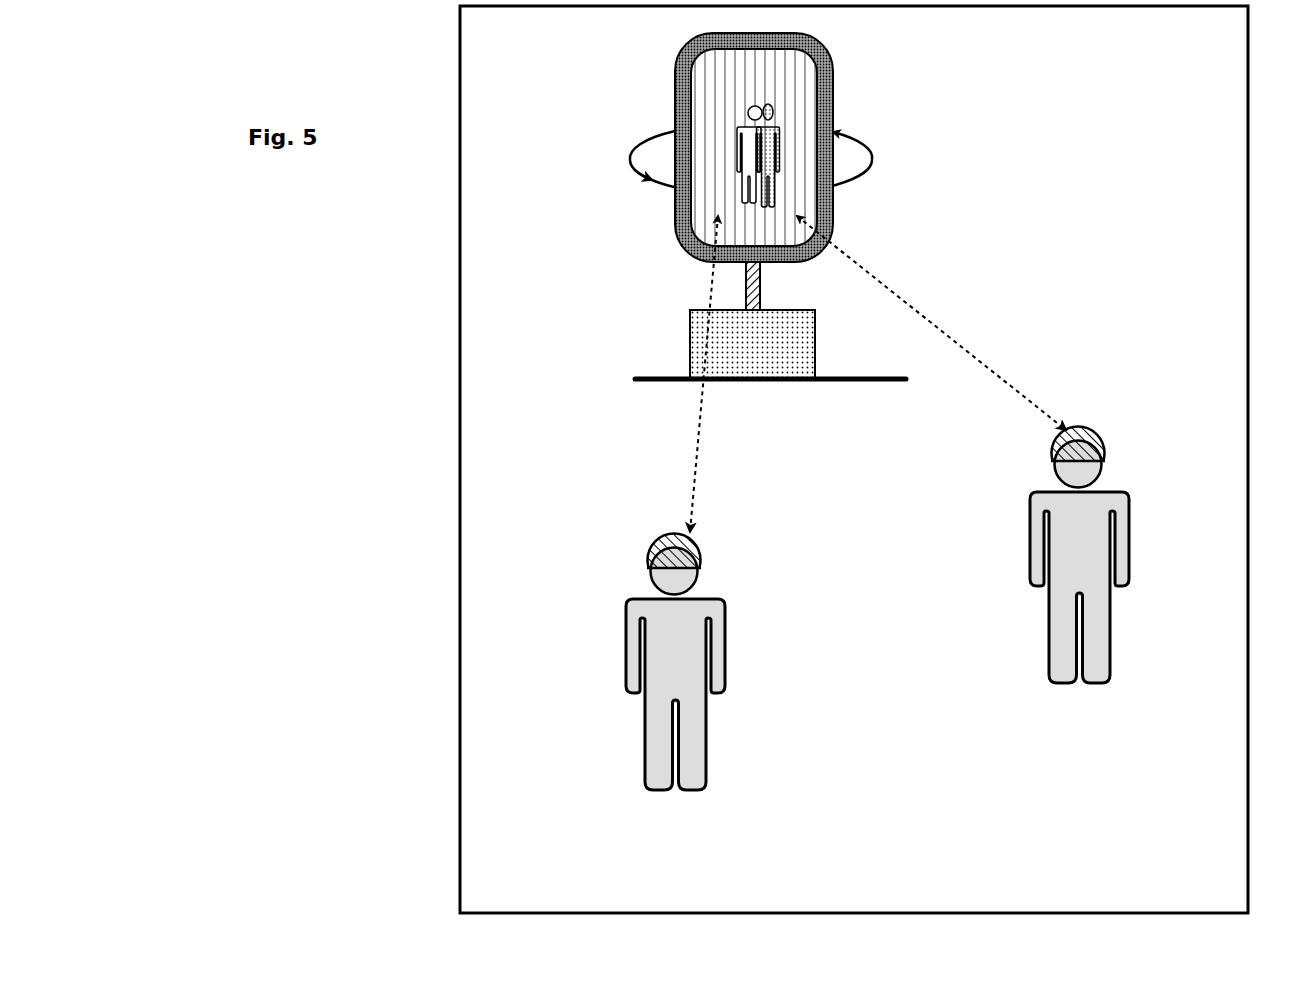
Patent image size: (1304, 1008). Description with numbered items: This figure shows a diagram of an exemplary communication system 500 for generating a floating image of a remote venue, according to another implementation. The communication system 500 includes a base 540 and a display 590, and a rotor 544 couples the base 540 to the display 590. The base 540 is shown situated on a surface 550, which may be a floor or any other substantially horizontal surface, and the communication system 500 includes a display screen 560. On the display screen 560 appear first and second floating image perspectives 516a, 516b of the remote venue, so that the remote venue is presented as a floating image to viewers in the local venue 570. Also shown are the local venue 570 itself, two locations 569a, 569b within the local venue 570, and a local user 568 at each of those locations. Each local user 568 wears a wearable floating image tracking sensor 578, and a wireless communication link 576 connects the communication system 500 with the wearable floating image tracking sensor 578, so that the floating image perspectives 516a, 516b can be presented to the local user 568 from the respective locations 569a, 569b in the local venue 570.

The communication system 500 is at (1090, 112).
The first floating image perspective 516a is at (742, 122).
The second floating image perspective 516b is at (783, 117).
The base 540 is at (818, 338).
The rotor 544 is at (762, 291).
The surface 550 is at (632, 378).
The display screen 560 is at (835, 222).
The local user 568 is at (626, 651).
The location 569a is at (632, 785).
The location 569b is at (1122, 678).
The local venue 570 is at (854, 459).
The wireless communication link 576 is at (700, 470).
The wearable floating image tracking sensor 578 is at (693, 533).
The display 590 is at (918, 98).